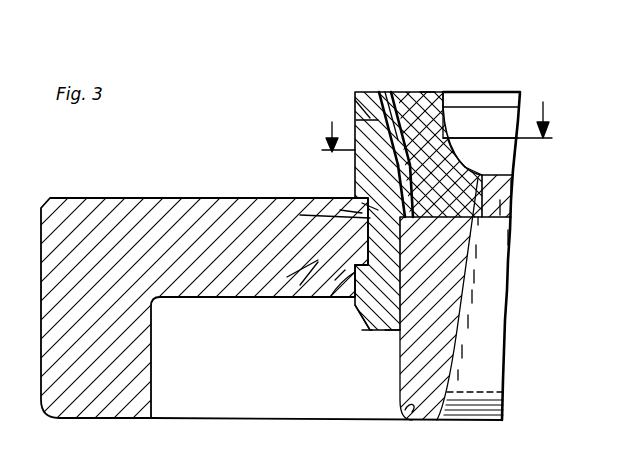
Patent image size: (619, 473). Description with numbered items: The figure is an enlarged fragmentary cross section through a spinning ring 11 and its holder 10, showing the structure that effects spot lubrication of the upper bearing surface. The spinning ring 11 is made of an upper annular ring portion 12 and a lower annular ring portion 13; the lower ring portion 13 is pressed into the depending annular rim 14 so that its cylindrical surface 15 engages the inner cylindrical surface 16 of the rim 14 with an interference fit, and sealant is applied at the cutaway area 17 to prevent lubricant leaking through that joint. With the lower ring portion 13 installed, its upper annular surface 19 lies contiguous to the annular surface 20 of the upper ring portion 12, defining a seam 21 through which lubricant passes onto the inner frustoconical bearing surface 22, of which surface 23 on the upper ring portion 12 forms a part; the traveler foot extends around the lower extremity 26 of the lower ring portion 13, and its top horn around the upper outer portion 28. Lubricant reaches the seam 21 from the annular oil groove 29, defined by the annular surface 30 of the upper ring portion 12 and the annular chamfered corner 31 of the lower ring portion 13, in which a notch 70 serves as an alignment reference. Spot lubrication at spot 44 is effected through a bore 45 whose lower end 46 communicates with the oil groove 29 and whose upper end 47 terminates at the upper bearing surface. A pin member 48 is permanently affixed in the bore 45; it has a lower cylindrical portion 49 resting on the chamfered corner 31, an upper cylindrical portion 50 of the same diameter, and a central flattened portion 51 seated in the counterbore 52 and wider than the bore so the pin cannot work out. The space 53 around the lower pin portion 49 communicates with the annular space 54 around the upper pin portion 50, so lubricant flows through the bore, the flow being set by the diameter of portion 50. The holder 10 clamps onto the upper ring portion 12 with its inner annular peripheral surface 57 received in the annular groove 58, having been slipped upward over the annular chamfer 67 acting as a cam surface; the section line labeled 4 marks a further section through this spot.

The holder 10 is at (50, 198).
The upper annular ring portion 12 is at (500, 92).
The upper outer portion 28 is at (355, 95).
The spot 44 is at (385, 92).
The upper end 47 is at (397, 105).
The bore 45 is at (357, 117).
The annular space 54 is at (370, 120).
The upper cylindrical portion 50 is at (425, 93).
The notch 70 is at (443, 107).
The pin member 48 is at (448, 122).
The central flattened portion 51 is at (453, 158).
The counterbore 52 is at (473, 175).
The lower end 46 is at (512, 172).
The space 53 is at (518, 187).
The surface 23 is at (507, 207).
The upper annular surface 19 is at (478, 220).
The seam 21 is at (510, 235).
The annular surface 20 is at (480, 252).
The cylindrical surface 15 is at (480, 277).
The inner frustoconical bearing surface 22 is at (480, 297).
The lower annular ring portion 13 is at (480, 322).
The spinning ring 11 is at (480, 350).
The section line 4- 4 is at (427, 129).
The annular oil groove 29 is at (300, 215).
The annular groove 58 is at (340, 210).
The lower cylindrical portion 49 is at (362, 203).
The annular surface 30 is at (287, 277).
The annular chamfered corner 31 is at (300, 285).
The depending annular rim 14 is at (335, 280).
The inner annular peripheral surface 57 is at (363, 313).
The inner cylindrical surface 16 is at (366, 325).
The annular chamfer 67 is at (365, 330).
The cutaway area 17 is at (393, 340).
The lower extremity 26 is at (405, 410).